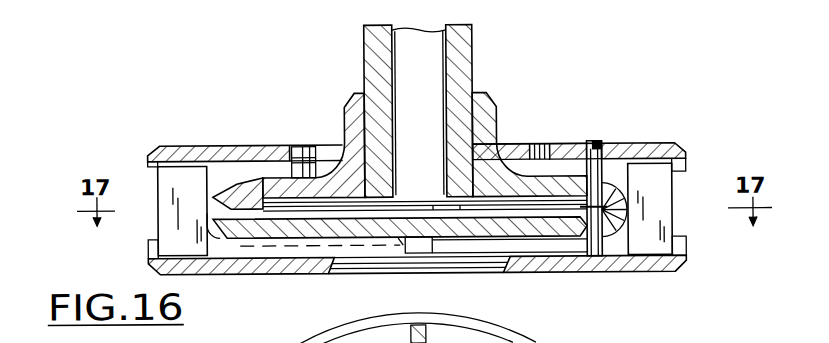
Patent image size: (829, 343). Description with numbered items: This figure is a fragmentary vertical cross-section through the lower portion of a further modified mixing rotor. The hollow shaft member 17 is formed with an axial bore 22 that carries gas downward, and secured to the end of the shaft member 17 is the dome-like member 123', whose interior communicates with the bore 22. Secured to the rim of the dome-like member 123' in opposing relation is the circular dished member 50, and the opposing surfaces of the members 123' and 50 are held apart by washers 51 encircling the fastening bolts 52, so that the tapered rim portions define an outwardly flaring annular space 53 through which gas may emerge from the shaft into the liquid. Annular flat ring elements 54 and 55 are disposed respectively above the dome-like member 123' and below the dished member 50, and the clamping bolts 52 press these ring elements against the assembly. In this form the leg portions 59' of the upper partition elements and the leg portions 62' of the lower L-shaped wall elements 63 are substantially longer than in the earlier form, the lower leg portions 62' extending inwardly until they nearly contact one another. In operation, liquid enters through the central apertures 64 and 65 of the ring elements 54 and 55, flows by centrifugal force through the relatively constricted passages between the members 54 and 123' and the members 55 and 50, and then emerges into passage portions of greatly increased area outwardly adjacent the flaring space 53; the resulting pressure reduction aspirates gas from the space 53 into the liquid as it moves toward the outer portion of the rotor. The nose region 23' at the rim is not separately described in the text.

The shaft member 17 is at (467, 50).
The axial bore 22 is at (395, 73).
The sealing nose 23' is at (217, 154).
The circular dished member 50 is at (463, 232).
The washers 51 is at (618, 213).
The fastening bolts 52 is at (598, 143).
The outwardly flaring annular space 53 is at (208, 209).
The annular flat ring element 54 is at (222, 146).
The annular flat ring element 55 is at (240, 273).
The leg portions 59' is at (567, 130).
The leg portions 62' is at (321, 271).
The L-shaped wall elements 63 is at (168, 184).
The central aperture 64 is at (306, 146).
The central aperture 65 is at (374, 264).
The dome-like member 123' is at (424, 141).